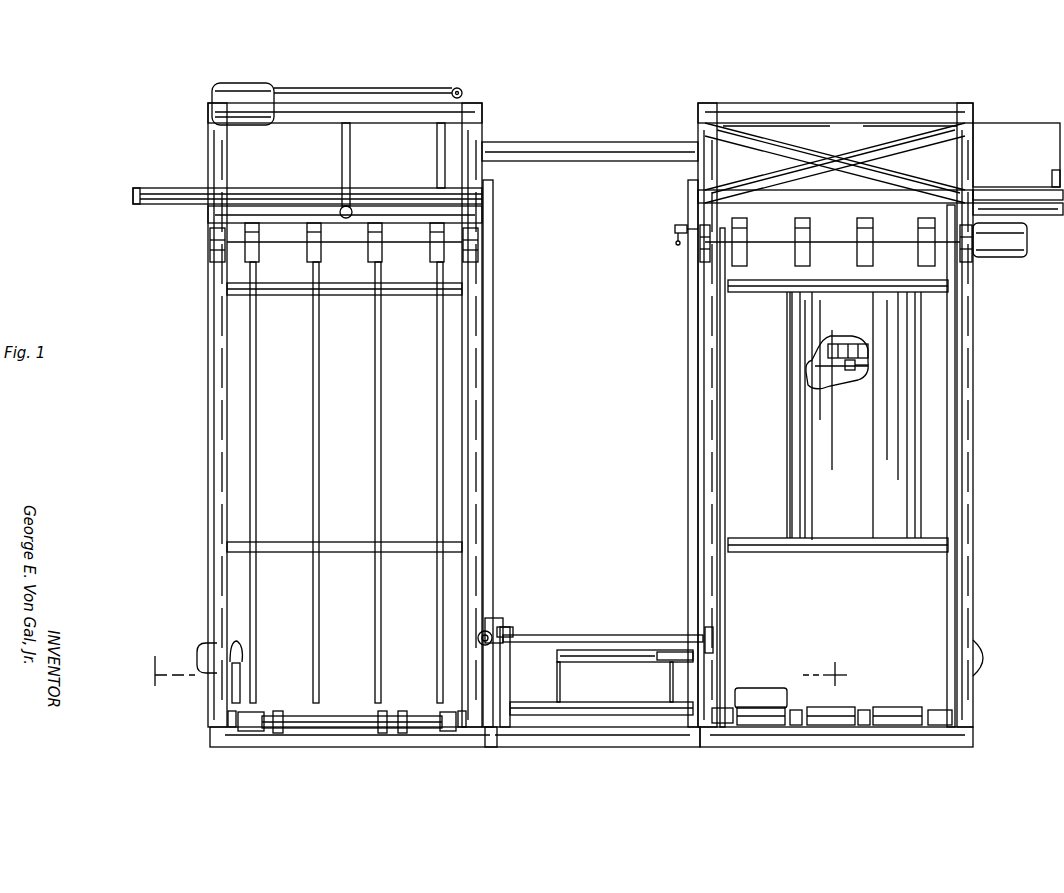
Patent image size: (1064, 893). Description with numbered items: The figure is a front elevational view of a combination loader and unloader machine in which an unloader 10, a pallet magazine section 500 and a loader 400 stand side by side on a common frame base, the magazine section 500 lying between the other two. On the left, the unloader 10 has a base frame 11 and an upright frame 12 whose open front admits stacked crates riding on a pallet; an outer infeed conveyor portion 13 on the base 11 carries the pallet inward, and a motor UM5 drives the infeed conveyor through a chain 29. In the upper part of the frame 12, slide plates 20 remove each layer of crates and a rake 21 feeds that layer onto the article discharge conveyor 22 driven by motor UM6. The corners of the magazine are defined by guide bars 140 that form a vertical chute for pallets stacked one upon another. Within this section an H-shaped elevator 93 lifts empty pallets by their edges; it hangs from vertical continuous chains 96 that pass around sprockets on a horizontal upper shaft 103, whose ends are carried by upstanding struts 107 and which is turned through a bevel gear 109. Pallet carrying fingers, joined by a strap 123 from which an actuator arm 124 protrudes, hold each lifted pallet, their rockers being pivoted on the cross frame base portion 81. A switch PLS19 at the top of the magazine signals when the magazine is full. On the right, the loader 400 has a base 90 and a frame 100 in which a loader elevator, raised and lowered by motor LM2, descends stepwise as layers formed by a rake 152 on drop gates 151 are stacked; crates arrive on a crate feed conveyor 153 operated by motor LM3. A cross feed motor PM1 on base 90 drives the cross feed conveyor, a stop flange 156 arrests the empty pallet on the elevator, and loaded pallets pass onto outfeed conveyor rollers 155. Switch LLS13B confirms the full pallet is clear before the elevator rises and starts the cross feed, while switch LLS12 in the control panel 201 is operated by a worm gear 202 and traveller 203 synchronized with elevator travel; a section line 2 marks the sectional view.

The unloader 10 is at (327, 415).
The base frame 11 is at (312, 745).
The upright frame 12 is at (212, 362).
The outer infeed conveyor portion 13 is at (325, 718).
The slide plates 20 is at (300, 212).
The rake 21 is at (437, 158).
The article discharge conveyor 22 is at (166, 197).
The chain 29 is at (236, 692).
The motor UM6 is at (246, 90).
The motor UM5 is at (210, 658).
The section line 2 is at (496, 664).
The guide bars 140 is at (492, 448).
The upstanding struts 107 is at (504, 626).
The bevel gear 109 is at (488, 631).
The horizontal upper shaft 103 is at (592, 642).
The continuous chain 96 is at (510, 682).
The elevator 93 is at (599, 704).
The strap 123 is at (627, 659).
The actuator arm 124 is at (666, 660).
The cross frame base portion 81 is at (562, 745).
The pallet magazine section 500 is at (642, 168).
The loader frame 100 is at (978, 340).
The loader 400 is at (858, 102).
The drop gates 151 is at (850, 200).
The switch PLS19 is at (675, 232).
The rake 152 is at (1037, 127).
The crate feed conveyor 153 is at (1027, 183).
The motor LM3 is at (1008, 253).
The switch LLS12 is at (848, 342).
The control panel 201 is at (789, 349).
The worm gear 202 is at (870, 370).
The traveller 203 is at (858, 380).
The loader base portion 90 is at (875, 745).
The cross feed motor PM1 is at (760, 694).
The switch LLS13B is at (716, 716).
The outfeed conveyor rollers 155 is at (830, 706).
The stop flange 156 is at (946, 707).
The motor LM2 is at (988, 656).